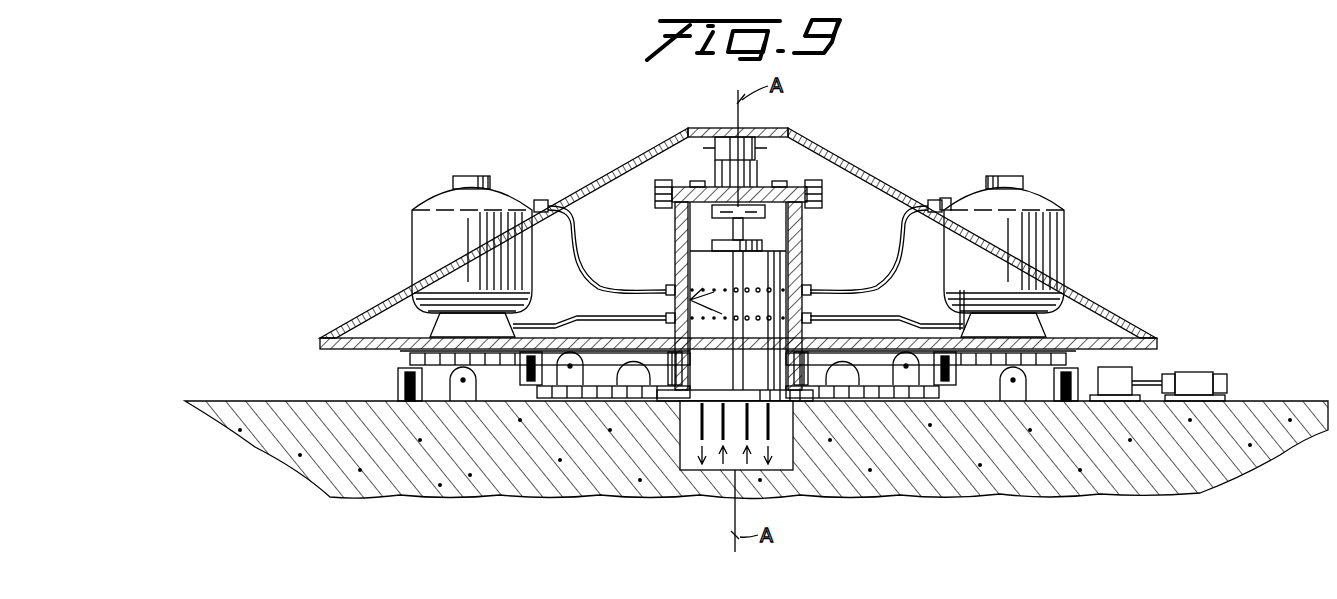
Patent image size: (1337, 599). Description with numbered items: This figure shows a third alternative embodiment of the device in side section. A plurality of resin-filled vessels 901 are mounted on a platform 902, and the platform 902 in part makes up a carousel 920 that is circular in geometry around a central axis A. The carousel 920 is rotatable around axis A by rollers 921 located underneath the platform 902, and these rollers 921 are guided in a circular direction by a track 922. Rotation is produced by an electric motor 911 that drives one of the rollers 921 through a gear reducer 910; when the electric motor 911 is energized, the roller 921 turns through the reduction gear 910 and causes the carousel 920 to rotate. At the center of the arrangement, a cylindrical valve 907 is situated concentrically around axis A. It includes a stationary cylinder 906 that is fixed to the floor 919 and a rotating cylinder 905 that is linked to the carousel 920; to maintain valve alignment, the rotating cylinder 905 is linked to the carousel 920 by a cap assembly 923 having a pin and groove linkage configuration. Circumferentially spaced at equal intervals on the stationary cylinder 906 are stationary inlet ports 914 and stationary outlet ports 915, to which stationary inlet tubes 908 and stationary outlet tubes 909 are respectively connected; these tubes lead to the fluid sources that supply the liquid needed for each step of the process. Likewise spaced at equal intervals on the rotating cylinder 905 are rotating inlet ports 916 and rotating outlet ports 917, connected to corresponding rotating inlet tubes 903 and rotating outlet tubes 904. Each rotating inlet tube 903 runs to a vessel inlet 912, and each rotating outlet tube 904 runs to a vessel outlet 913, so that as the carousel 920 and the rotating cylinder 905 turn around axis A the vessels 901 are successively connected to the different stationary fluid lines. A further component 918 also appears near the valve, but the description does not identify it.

The resin-filled vessels 901 is at (418, 196).
The platform 902 is at (1160, 340).
The rotating inlet tubes 903 is at (541, 200).
The rotating outlet tubes 904 is at (547, 322).
The rotating cylinder 905 is at (803, 232).
The stationary cylinder 906 is at (808, 185).
The cylindrical valve 907 is at (800, 262).
The stationary inlet tubes 908 is at (711, 475).
The stationary outlet tubes 909 is at (735, 455).
The gear reducer 910 is at (1135, 372).
The electric motor 911 is at (1228, 378).
The vessel inlet 912 is at (948, 198).
The vessel outlet 913 is at (962, 330).
The stationary inlet ports 914 is at (690, 298).
The stationary outlet ports 915 is at (672, 288).
The rotating inlet ports 916 is at (810, 288).
The rotating outlet ports 917 is at (811, 318).
The bolt 918 is at (672, 198).
The floor 919 is at (1055, 485).
The carousel 920 is at (1105, 300).
The rollers 921 is at (950, 388).
The track 922 is at (880, 402).
The cap assembly 923 is at (760, 138).